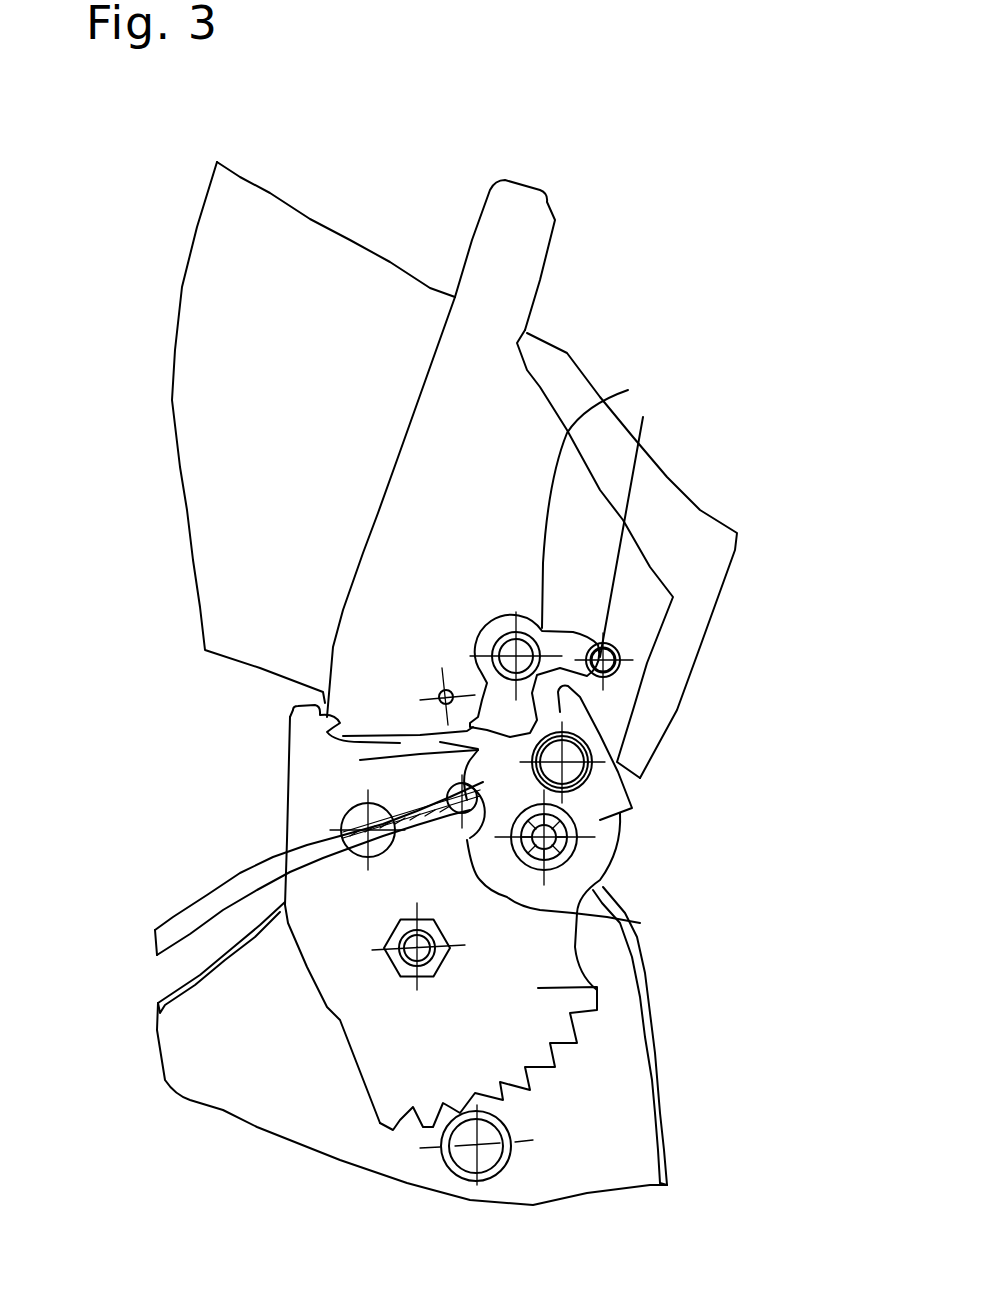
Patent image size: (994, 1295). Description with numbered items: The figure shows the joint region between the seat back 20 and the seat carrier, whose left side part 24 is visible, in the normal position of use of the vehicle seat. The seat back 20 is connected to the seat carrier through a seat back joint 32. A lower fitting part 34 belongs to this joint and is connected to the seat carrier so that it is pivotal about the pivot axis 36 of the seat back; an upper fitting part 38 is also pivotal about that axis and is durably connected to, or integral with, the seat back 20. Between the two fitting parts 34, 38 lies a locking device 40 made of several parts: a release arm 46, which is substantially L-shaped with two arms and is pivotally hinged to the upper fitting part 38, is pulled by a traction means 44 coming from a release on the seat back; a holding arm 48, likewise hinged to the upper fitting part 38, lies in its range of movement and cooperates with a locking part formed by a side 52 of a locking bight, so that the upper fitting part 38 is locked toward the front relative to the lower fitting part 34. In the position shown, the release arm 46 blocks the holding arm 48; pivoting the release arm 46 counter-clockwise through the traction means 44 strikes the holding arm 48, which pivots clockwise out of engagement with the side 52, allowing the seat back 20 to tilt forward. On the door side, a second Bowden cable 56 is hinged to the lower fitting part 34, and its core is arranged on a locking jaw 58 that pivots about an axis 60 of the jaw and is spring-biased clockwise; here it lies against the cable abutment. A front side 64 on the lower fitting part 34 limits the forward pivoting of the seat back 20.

The seat back 20 is at (368, 270).
The left side part 24 is at (287, 1110).
The seat back joint 32 is at (247, 690).
The lower fitting part 34 is at (593, 987).
The pivot axis 36 is at (400, 958).
The upper fitting part 38 is at (515, 387).
The locking device 40 is at (698, 707).
The traction means 44 is at (633, 487).
The release arm 46 is at (628, 390).
The holding arm 48 is at (587, 797).
The side of locking bight 52 is at (360, 760).
The second Bowden cable 56 is at (195, 897).
The locking jaw 58 is at (640, 923).
The axis of the jaw 60 is at (575, 843).
The front side 64 is at (292, 718).